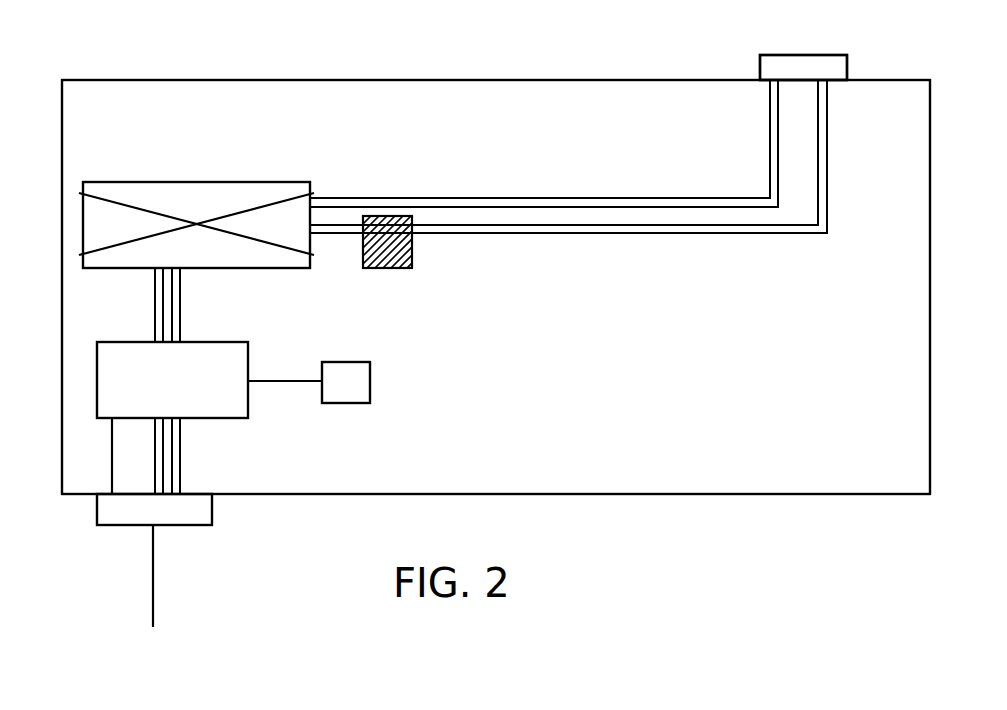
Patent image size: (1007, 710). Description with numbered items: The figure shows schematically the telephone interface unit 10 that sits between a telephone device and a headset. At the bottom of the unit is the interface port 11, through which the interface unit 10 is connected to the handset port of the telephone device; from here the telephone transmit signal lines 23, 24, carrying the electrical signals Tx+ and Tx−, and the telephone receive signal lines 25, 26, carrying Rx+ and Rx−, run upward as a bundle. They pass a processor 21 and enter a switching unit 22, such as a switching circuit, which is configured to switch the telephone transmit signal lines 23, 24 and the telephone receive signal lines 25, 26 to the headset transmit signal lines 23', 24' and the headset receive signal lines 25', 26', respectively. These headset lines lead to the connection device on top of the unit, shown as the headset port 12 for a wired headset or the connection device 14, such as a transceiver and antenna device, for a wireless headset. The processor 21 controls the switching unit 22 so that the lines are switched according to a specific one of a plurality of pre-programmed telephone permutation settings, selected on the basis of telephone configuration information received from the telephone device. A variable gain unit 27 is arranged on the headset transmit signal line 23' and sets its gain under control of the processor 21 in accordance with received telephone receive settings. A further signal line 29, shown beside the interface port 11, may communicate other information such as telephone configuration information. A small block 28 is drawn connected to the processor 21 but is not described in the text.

The interface unit 10 is at (713, 510).
The interface port 11 is at (212, 525).
The headset port 12 is at (818, 32).
The connection device 14 is at (803, 67).
The processor 21 is at (212, 340).
The switching unit 22 is at (147, 180).
The telephone transmit signal line 23 is at (231, 381).
The telephone transmit signal line 24 is at (240, 381).
The telephone receive signal line 25 is at (260, 381).
The telephone receive signal line 26 is at (282, 381).
The headset transmit signal line 23' is at (568, 204).
The headset transmit signal line 24' is at (564, 197).
The headset receive signal line 25' is at (540, 139).
The headset receive signal line 26' is at (544, 143).
The variable gain unit 27 is at (380, 268).
The sensor 28 is at (370, 387).
The signal line 29 is at (110, 473).